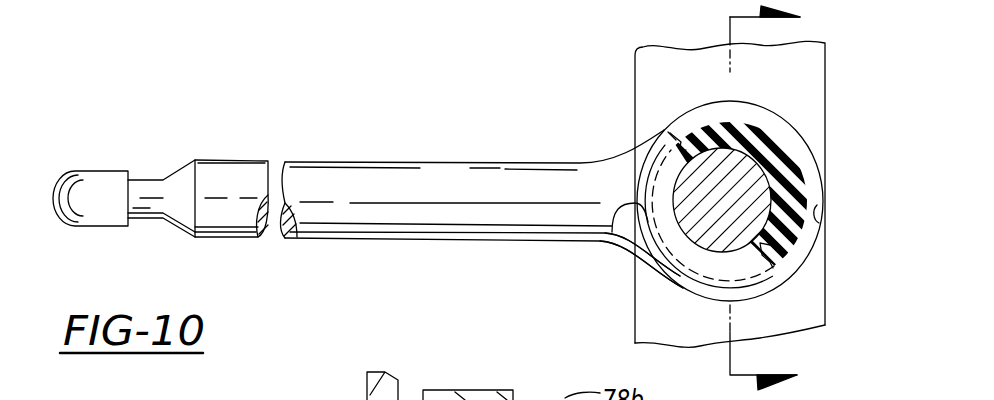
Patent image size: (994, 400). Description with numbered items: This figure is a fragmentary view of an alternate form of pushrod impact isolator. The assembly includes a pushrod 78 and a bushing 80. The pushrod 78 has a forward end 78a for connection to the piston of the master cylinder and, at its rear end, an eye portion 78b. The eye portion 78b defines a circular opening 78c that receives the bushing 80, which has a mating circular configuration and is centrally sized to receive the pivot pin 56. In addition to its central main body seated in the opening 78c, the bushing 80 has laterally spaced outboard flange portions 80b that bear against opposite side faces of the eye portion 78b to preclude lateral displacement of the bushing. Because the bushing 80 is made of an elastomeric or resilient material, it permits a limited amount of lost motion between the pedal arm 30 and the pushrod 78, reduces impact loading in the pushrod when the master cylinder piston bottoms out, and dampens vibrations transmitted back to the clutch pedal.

The pedal arm 30 is at (635, 322).
The pivot pin 56 is at (722, 170).
The pushrod 78 is at (432, 161).
The forward end 78a is at (72, 171).
The eye portion 78b is at (803, 137).
The circular opening 78c is at (613, 233).
The bushing 80 is at (822, 215).
The outboard flange portions 80b is at (668, 150).